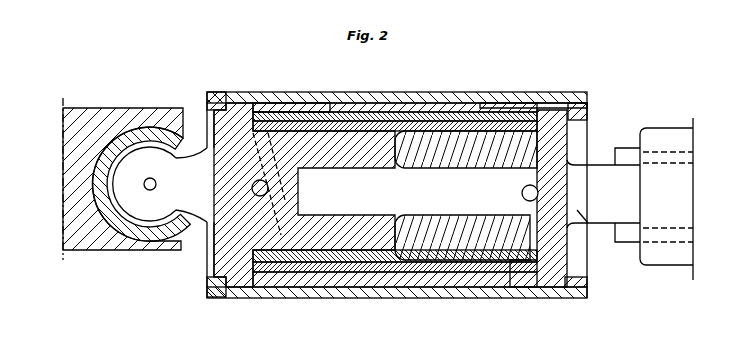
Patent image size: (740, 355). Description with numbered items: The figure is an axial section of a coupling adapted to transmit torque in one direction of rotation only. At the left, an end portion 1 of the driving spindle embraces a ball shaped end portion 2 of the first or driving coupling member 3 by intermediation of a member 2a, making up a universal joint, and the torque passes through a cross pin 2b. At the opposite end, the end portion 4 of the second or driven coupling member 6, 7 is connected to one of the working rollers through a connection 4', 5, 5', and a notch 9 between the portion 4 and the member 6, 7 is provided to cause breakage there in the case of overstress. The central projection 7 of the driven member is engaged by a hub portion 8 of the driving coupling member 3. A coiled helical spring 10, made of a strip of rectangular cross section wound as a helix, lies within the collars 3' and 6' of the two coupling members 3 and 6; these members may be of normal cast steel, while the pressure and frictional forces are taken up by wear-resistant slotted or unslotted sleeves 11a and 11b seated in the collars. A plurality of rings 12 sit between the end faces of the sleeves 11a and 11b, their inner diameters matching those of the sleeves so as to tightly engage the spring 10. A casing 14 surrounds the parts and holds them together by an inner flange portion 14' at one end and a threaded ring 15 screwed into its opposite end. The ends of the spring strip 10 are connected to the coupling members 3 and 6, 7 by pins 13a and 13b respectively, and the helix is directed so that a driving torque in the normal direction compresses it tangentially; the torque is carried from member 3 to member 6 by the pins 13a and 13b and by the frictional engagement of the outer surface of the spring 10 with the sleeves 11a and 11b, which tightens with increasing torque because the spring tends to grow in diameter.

The end portion of the driving spindle 1 is at (102, 120).
The ball shaped end portion 2 is at (145, 160).
The intermediate member 2a is at (123, 230).
The cross pin 2b is at (150, 190).
The driving coupling member 3 is at (287, 171).
The collar of the driving coupling member 3' is at (291, 76).
The end portion of the driven coupling member 4 is at (603, 178).
The connection portion 4' is at (627, 174).
The connection 5 is at (666, 186).
The connection detail 5' is at (668, 158).
The driven coupling member 6 is at (559, 198).
The collar of the driven coupling member 6' is at (533, 73).
The central projection 7 is at (408, 195).
The hub portion 8 is at (299, 237).
The notch 9 is at (588, 223).
The coiled helical spring 10 is at (373, 252).
The wear-resistant sleeve 11a is at (272, 264).
The wear-resistant sleeve 11b is at (497, 252).
The rings 12 is at (333, 250).
The pin 13a is at (208, 285).
The pin 13b is at (531, 201).
The casing 14 is at (397, 217).
The inner flange portion 14' is at (220, 76).
The threaded ring 15 is at (588, 113).